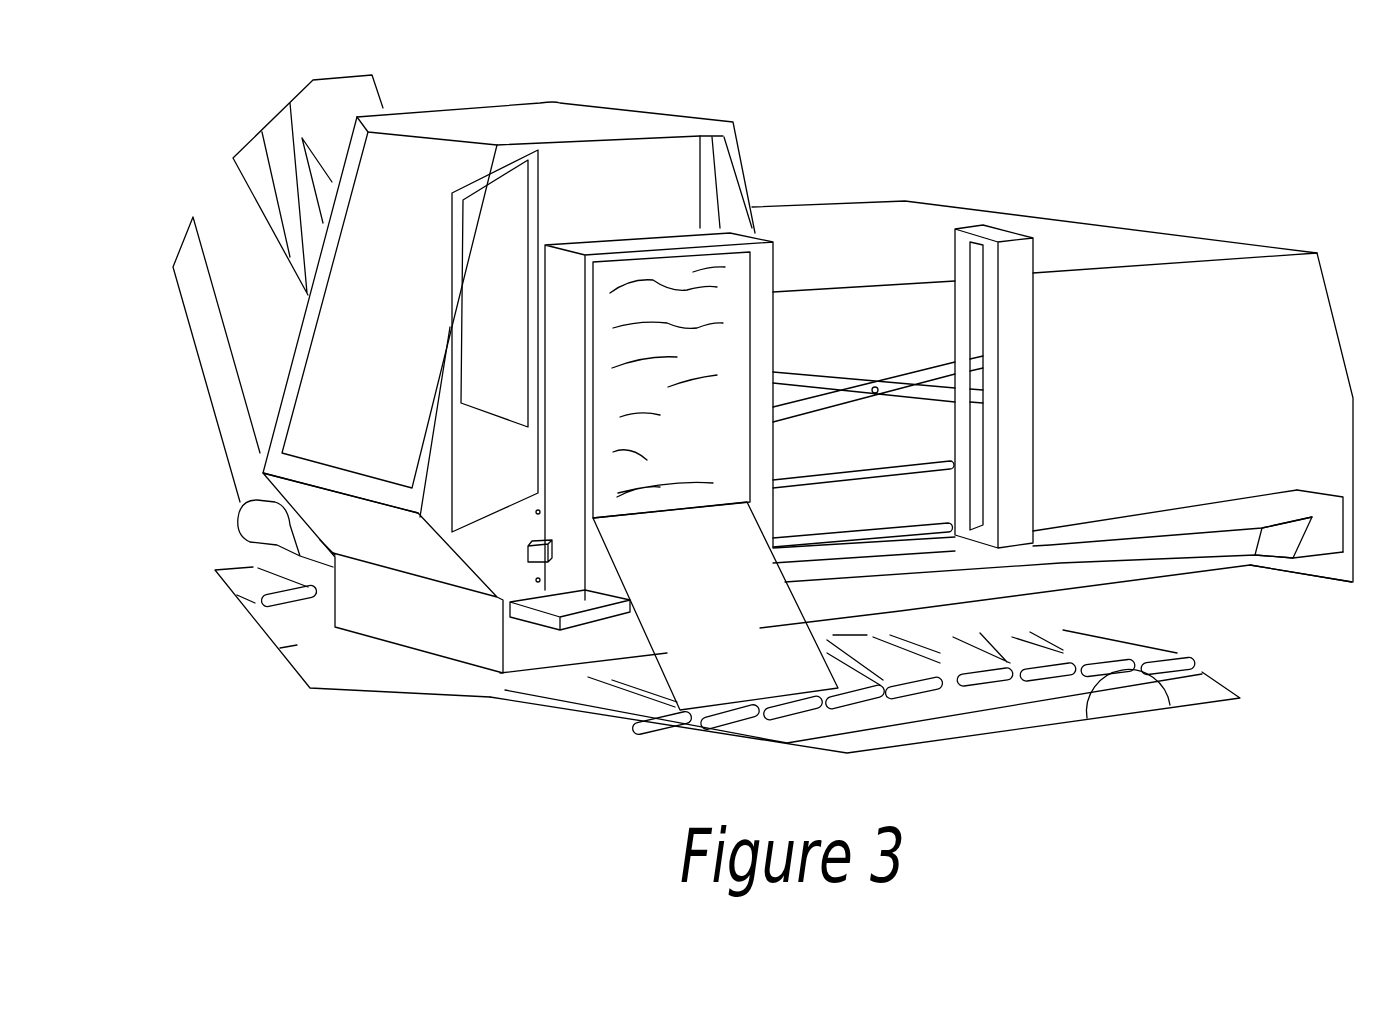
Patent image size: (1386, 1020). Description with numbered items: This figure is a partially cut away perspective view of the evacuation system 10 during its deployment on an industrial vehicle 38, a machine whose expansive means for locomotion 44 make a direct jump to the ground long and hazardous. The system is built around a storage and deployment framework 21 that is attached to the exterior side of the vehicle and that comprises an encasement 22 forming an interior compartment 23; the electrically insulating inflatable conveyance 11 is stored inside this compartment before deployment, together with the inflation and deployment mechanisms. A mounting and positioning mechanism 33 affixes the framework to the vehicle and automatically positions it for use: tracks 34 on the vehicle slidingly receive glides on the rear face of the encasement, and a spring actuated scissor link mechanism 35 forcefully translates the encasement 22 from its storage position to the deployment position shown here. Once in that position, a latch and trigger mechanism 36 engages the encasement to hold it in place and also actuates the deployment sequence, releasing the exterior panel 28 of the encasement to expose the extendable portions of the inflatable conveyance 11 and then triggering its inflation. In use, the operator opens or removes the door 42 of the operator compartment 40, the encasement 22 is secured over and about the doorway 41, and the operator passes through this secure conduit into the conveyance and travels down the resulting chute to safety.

The evacuation system 10 is at (783, 94).
The electrically insulating inflatable conveyance 11 is at (603, 438).
The storage and deployment framework 21 is at (786, 273).
The encasement 22 is at (560, 317).
The interior compartment 23 is at (630, 387).
The exterior panel 28 is at (670, 653).
The mounting and positioning mechanism 33 is at (1092, 318).
The tracks 34 is at (820, 473).
The spring actuated scissor link mechanism 35 is at (858, 375).
The latch and trigger mechanism 36 is at (545, 555).
The industrial vehicle 38 is at (1186, 202).
The operator compartment 40 is at (330, 375).
The doorway 41 is at (640, 188).
The door 42 is at (425, 158).
The means for locomotion 44 is at (1176, 623).